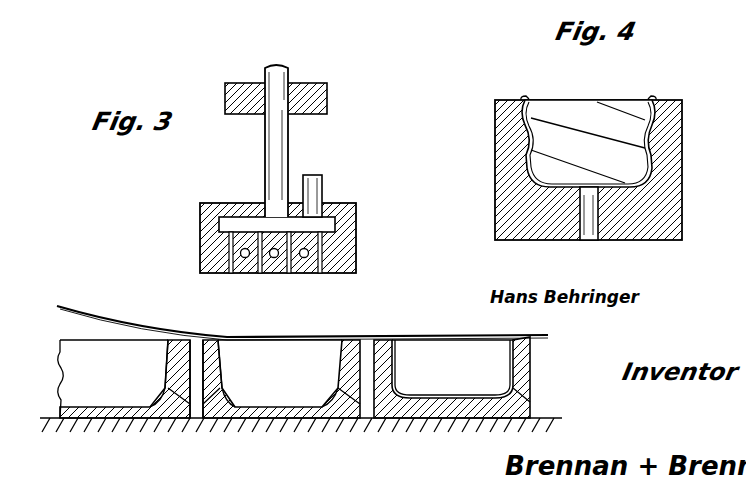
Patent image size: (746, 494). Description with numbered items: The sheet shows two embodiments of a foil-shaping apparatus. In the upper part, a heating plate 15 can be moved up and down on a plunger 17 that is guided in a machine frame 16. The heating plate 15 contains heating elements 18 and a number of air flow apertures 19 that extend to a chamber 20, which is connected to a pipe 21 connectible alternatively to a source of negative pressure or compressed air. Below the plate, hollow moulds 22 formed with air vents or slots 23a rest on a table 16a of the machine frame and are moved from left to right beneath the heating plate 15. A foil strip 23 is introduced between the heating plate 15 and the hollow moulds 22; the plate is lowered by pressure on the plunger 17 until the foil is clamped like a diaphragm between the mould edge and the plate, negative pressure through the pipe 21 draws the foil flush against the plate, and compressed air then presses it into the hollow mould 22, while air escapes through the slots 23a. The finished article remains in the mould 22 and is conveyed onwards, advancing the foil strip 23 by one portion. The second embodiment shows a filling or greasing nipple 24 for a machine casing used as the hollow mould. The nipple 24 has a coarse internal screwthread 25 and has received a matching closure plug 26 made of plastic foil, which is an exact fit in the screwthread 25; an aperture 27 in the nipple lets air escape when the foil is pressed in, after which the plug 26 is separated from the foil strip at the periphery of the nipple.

In FIG. 3, the heating plate 15 is at (343, 245).
In FIG. 3, the machine frame 16 is at (244, 116).
In FIG. 3, the table 16a is at (428, 426).
In FIG. 3, the plunger 17 is at (268, 77).
In FIG. 3, the heating elements 18 is at (257, 274).
In FIG. 3, the air flow apertures 19 is at (318, 275).
In FIG. 3, the chamber 20 is at (233, 223).
In FIG. 3, the pipe 21 is at (320, 181).
In FIG. 3, the hollow mould 22 is at (118, 410).
In FIG. 3, the foil strip 23 is at (142, 331).
In FIG. 3, the air vents or slots 23a is at (205, 421).
In FIG. 4, the greasing nipple 24 is at (541, 226).
In FIG. 4, the internal screwthread 25 is at (532, 138).
In FIG. 4, the closure plug 26 is at (653, 140).
In FIG. 4, the aperture 27 is at (594, 226).